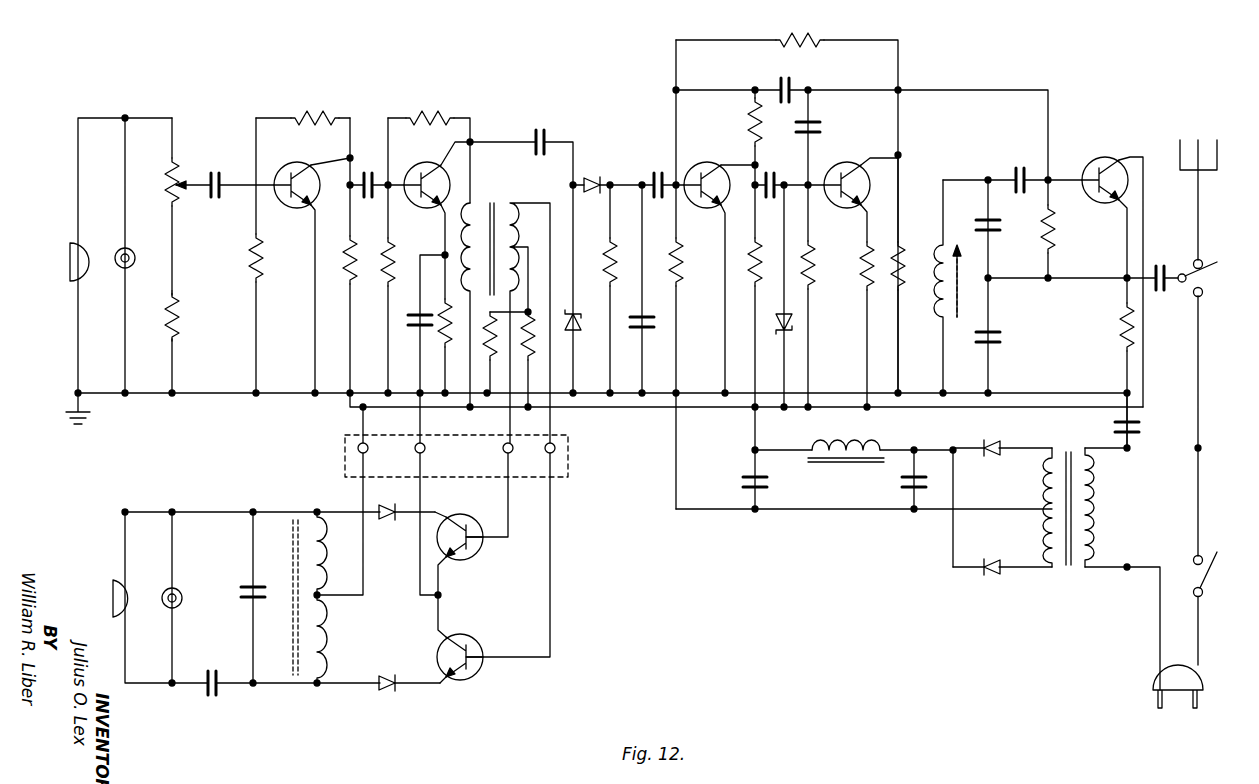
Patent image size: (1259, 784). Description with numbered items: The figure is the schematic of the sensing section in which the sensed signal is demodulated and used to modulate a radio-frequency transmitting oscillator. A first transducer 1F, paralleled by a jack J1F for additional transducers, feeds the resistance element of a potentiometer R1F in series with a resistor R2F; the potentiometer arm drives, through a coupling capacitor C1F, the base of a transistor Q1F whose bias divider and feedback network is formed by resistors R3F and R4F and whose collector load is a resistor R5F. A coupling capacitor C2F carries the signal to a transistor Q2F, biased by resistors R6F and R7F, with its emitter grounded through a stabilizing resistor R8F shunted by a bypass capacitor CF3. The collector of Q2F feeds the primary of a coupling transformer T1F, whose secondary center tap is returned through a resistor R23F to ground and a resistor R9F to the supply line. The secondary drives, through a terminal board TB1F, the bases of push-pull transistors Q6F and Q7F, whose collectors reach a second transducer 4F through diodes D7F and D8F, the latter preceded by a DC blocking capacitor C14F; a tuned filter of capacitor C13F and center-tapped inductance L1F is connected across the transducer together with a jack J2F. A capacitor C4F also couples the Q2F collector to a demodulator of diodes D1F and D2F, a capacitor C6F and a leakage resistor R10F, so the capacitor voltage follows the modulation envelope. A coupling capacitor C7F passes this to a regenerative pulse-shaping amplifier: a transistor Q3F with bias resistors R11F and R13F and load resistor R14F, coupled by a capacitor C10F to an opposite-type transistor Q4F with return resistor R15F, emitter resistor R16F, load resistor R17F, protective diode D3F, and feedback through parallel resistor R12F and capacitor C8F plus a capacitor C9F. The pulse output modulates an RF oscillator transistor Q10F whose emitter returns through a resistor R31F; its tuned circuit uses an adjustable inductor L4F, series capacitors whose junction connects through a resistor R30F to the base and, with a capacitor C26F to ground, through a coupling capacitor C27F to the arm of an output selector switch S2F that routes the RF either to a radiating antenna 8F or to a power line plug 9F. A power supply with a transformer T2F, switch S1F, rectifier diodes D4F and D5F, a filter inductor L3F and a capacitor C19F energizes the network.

The first transducer 1F is at (59, 262).
The jack J1F is at (120, 268).
The potentiometer R1F is at (178, 170).
The resistor R2F is at (178, 325).
The resistor R3F is at (252, 258).
The coupling capacitor C1F is at (215, 199).
The resistor R4F is at (311, 112).
The transistor Q1F is at (298, 161).
The load resistor R5F is at (345, 270).
The coupling capacitor C2F is at (366, 172).
The resistor R6F is at (391, 254).
The resistor R7F is at (433, 110).
The transistor Q2F is at (430, 162).
The stabilizing resistor R8F is at (457, 350).
The signal bypass capacitor CF3 is at (408, 322).
The capacitor C4F is at (541, 129).
The coupling transformer T1F is at (492, 205).
The resistor R23F is at (490, 362).
The resistor R9F is at (535, 362).
The diode D1F is at (590, 176).
The diode D2F is at (579, 334).
The leakage resistor R10F is at (606, 256).
The capacitor C6F is at (650, 322).
The coupling capacitor C7F is at (656, 172).
The resistor R11F is at (683, 253).
The transistor Q3F is at (707, 162).
The resistor R13F is at (748, 121).
The load resistor R14F is at (752, 249).
The capacitor C8F is at (785, 78).
The capacitor C9F is at (812, 125).
The coupling capacitor C10F is at (772, 172).
The resistor R15F is at (810, 253).
The diode D3F is at (790, 336).
The transistor Q4F is at (857, 162).
The emitter stabilization resistor R16F is at (865, 274).
The load resistor R17F is at (897, 296).
The resistor R12F is at (806, 34).
The adjustable inductor L4F is at (938, 298).
The resistor R30F is at (1056, 227).
The RF oscillator transistor Q10F is at (1107, 156).
The resistor R31F is at (1122, 316).
The coupling capacitor C27F is at (1159, 292).
The capacitor C26F is at (1002, 336).
The output selector switch S2F is at (1218, 263).
The radiating antenna 8F is at (1203, 132).
The switch S1F is at (1211, 556).
The power line plug 9F is at (1170, 710).
The capacitor C19F is at (1148, 418).
The diode D4F is at (995, 442).
The diode D5F is at (992, 559).
The transformer T2F is at (1068, 522).
The inductor L3F is at (846, 439).
The second transducer 4F is at (106, 592).
The transducer jack J2F is at (181, 590).
The capacitor C13F is at (240, 594).
The DC blocking capacitor C14F is at (212, 670).
The center-tapped inductance L1F is at (325, 568).
The terminal board TB1F is at (345, 451).
The diode D7F is at (386, 525).
The diode D8F is at (386, 672).
The transistor Q6F is at (474, 505).
The transistor Q7F is at (465, 636).